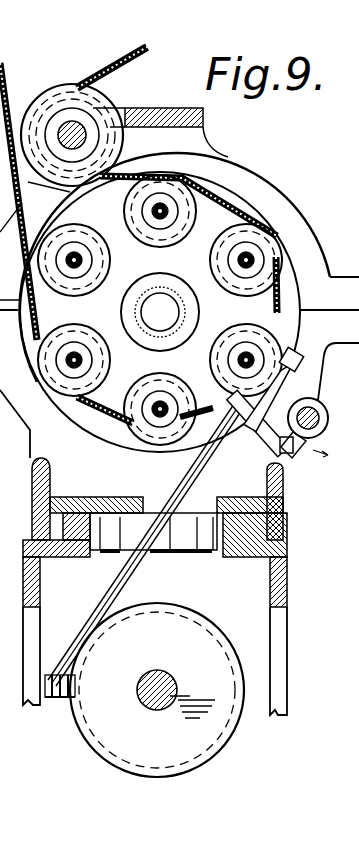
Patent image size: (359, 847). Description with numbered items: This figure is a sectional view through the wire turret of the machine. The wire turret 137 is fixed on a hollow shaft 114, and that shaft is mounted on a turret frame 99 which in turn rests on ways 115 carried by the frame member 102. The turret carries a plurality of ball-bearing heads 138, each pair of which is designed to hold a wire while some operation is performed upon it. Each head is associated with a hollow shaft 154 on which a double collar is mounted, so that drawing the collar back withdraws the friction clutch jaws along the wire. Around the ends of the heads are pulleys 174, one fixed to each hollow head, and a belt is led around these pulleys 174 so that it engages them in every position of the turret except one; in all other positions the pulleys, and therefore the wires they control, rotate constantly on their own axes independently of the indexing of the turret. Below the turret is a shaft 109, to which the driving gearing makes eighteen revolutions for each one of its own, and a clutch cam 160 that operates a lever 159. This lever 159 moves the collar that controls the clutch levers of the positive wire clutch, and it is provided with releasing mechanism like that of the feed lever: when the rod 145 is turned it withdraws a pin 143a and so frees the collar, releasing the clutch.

The turret frame 99 is at (288, 185).
The frame member 102 is at (25, 576).
The shaft 109 is at (166, 677).
The hollow shaft 114 is at (186, 313).
The ways 115 is at (250, 521).
The wire turret 137 is at (100, 432).
The ball-bearing heads 138 is at (158, 212).
The pin 143a is at (292, 458).
The rod 145 is at (316, 404).
The hollow shaft 154 is at (76, 261).
The lever 159 is at (105, 602).
The clutch cam 160 is at (88, 731).
The pulleys 174 is at (90, 318).